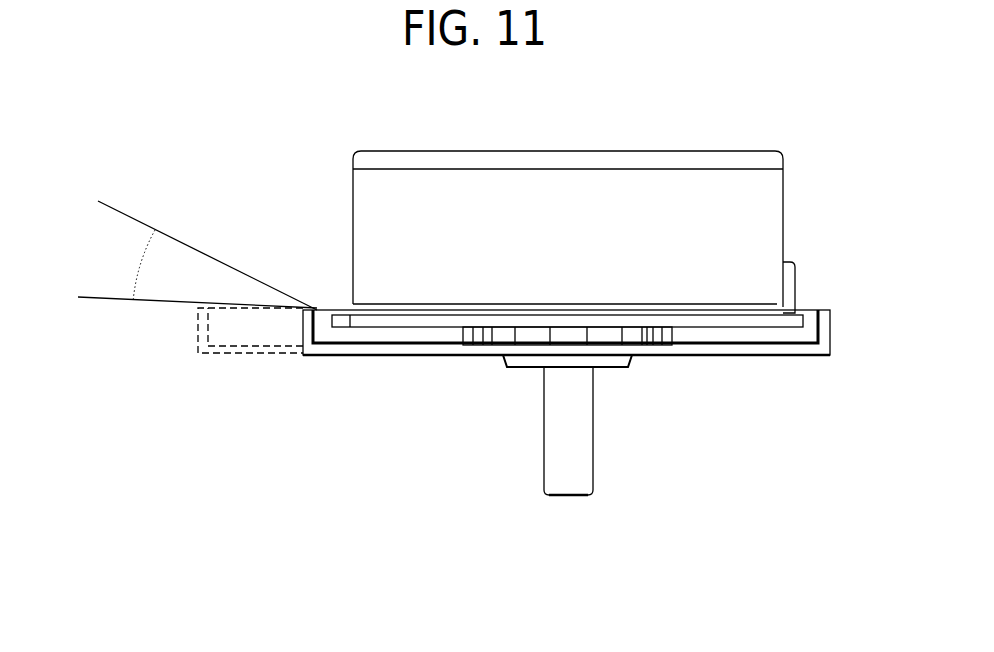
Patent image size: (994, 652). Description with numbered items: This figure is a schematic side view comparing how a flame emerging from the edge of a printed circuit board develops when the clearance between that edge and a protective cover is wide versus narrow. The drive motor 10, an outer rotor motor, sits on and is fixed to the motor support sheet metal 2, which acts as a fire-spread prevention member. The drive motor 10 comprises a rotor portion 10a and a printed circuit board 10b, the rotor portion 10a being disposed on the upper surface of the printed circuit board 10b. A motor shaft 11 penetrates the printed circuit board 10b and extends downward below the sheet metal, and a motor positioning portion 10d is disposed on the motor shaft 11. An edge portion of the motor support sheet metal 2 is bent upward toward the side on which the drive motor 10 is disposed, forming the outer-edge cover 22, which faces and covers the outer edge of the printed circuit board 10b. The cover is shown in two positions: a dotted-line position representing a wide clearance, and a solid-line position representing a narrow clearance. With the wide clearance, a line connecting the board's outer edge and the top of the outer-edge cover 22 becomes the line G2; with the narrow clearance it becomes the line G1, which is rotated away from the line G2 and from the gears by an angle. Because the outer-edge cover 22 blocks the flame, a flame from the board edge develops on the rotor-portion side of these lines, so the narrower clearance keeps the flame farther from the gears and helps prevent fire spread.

The motor support sheet metal 2 is at (768, 357).
The drive motor 10 is at (621, 278).
The rotor portion 10a is at (785, 195).
The printed circuit board 10b is at (785, 313).
The motor positioning portion 10d is at (632, 360).
The motor shaft 11 is at (593, 447).
The outer-edge cover 22 is at (190, 331).
The line G1 is at (191, 249).
The line G2 is at (182, 297).